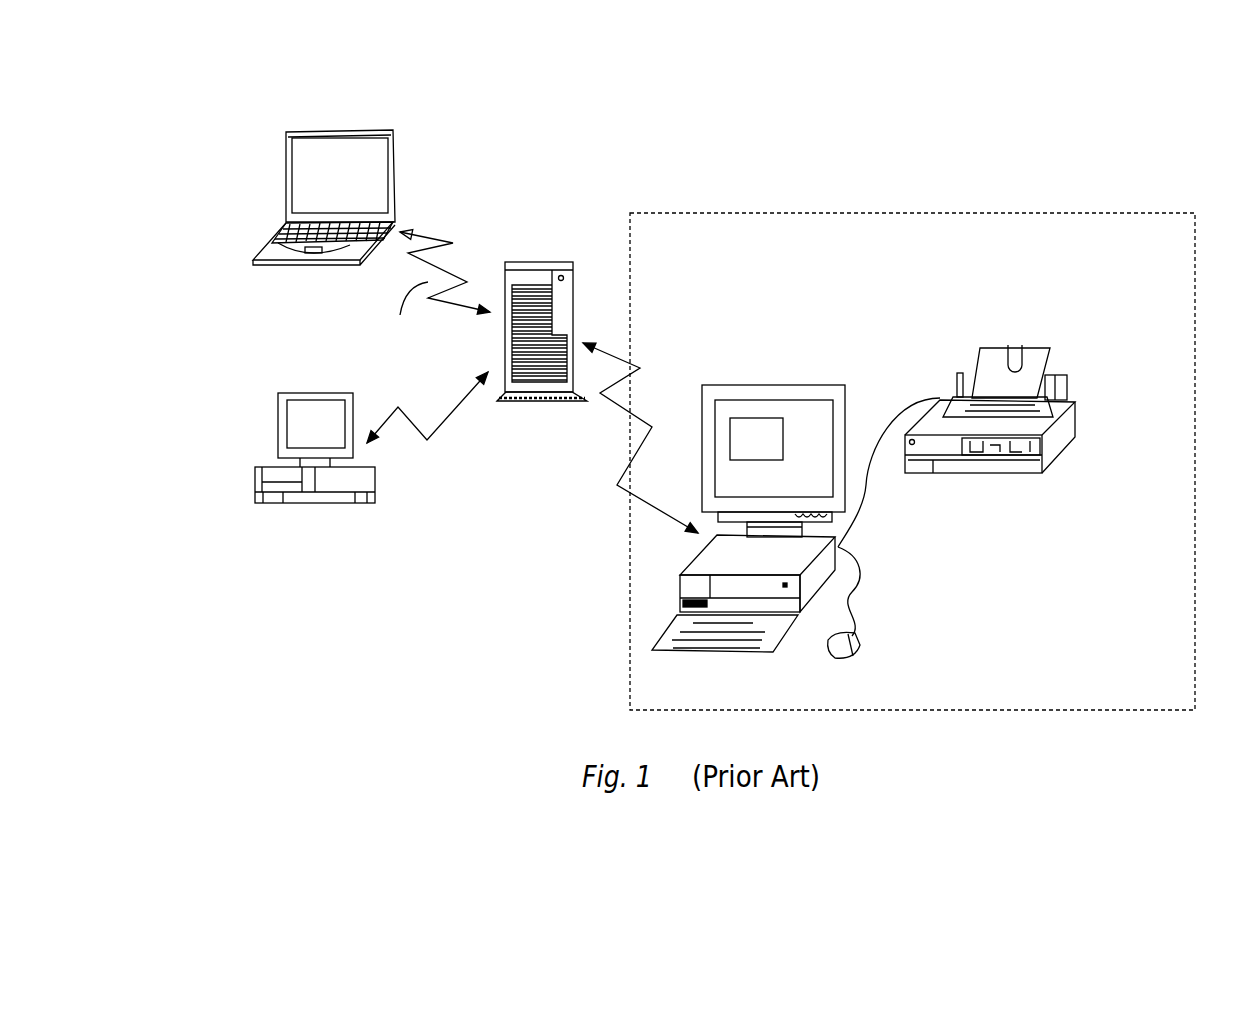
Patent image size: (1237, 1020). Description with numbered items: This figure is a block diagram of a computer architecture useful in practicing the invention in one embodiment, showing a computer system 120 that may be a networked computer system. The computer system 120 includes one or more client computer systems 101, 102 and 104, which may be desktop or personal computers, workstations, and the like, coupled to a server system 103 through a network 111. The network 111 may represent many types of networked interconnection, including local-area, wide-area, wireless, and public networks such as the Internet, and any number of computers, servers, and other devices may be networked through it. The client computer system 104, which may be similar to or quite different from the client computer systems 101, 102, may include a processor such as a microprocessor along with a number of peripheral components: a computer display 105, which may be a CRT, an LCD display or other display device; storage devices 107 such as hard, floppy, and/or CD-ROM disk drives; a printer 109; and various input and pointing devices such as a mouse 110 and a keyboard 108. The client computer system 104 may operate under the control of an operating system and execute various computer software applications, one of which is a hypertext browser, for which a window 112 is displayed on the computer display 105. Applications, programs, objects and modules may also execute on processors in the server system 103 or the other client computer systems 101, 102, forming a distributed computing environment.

The client computer system 101 is at (307, 113).
The client computer system 102 is at (310, 388).
The server system 103 is at (548, 262).
The client computer system 104 is at (733, 485).
The computer display 105 is at (747, 429).
The storage devices 107 is at (682, 602).
The keyboard 108 is at (650, 643).
The printer 109 is at (987, 340).
The mouse 110 is at (862, 643).
The network 111 is at (443, 362).
The window 112 is at (738, 447).
The computer system 120 is at (790, 202).